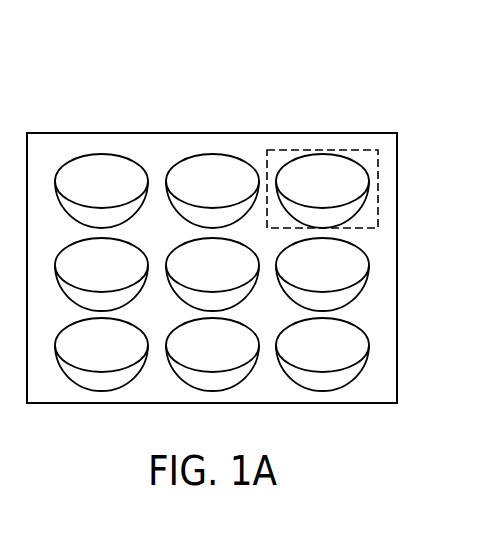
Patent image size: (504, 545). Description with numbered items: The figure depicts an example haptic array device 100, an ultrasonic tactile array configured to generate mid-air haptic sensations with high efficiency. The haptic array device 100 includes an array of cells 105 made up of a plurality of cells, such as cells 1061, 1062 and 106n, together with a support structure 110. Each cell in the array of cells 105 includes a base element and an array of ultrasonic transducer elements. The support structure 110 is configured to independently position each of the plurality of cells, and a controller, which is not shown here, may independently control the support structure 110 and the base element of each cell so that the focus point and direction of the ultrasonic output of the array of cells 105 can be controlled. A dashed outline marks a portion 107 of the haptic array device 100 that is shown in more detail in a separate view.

The haptic array device 100 is at (248, 204).
The array of cells 105 is at (180, 147).
The support structure 110 is at (212, 133).
The portion 107 is at (278, 138).
The cell 1061 is at (323, 148).
The cell 1062 is at (352, 266).
The cell 106n is at (352, 347).